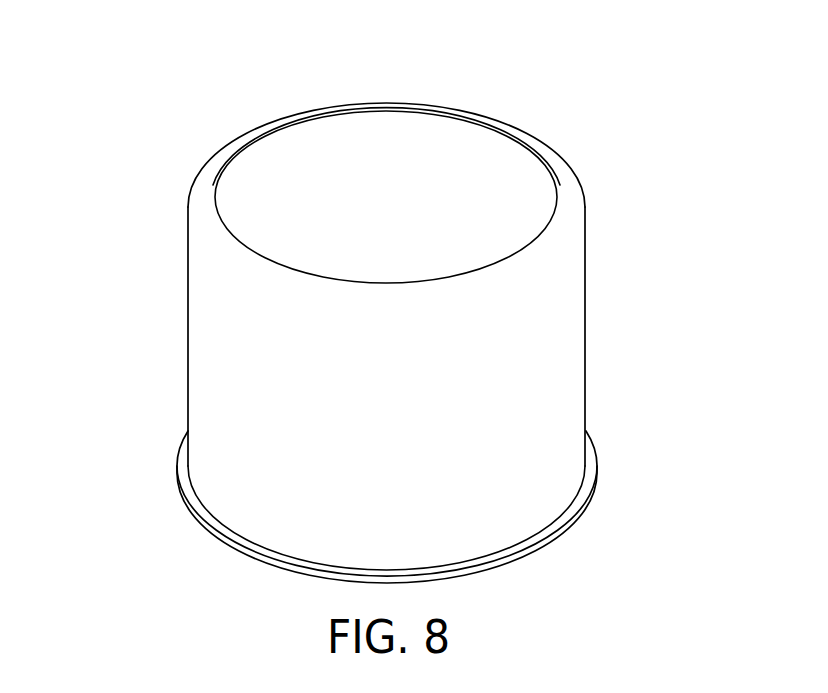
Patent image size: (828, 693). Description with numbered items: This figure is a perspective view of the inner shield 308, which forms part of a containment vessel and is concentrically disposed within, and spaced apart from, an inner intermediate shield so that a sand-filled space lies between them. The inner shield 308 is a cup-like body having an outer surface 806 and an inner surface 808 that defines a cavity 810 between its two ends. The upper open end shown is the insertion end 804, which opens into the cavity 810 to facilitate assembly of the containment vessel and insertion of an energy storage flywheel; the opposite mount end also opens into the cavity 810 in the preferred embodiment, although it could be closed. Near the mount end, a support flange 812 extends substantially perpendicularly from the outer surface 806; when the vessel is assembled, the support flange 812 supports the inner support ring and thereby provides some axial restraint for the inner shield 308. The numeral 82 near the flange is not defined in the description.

The inner shield 308 is at (151, 186).
The insertion end 804 is at (503, 122).
The outer surface 806 is at (581, 339).
The inner surface 808 is at (337, 131).
The cavity 810 is at (421, 164).
The support flange 812 is at (597, 470).
The flange bottom edge 82 is at (542, 549).